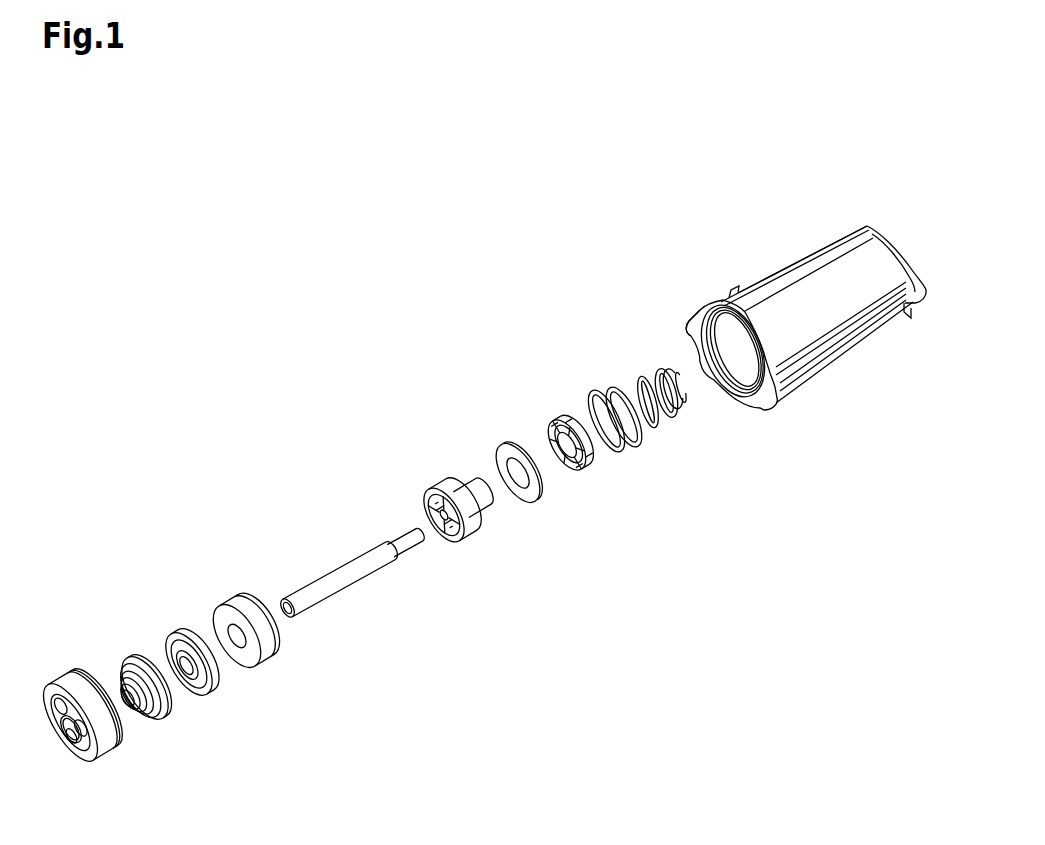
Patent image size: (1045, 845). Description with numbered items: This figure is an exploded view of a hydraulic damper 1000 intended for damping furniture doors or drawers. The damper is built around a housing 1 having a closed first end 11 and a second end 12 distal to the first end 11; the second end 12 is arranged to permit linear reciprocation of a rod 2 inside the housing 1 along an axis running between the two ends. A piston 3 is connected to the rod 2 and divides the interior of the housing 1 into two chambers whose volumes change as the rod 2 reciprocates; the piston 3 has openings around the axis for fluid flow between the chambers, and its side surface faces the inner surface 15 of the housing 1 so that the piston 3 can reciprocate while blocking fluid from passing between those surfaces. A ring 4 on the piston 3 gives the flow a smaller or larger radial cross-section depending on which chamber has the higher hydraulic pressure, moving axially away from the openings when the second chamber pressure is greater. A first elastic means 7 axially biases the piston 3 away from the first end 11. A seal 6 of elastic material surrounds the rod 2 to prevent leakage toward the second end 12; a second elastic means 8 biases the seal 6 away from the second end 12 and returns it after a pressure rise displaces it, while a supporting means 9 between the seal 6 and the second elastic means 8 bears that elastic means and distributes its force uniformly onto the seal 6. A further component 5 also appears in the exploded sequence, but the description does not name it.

The hydraulic damper 1000 is at (333, 192).
The housing 1 is at (793, 253).
The rod 2 is at (338, 574).
The piston 3 is at (430, 457).
The ring 4 is at (502, 425).
The star gear 5 is at (553, 410).
The seal 6 is at (232, 598).
The first elastic means 7 is at (661, 368).
The second elastic means 8 is at (130, 660).
The supporting means 9 is at (183, 633).
The first end 11 is at (860, 217).
The second end 12 is at (688, 318).
The inner surface 15 is at (750, 355).